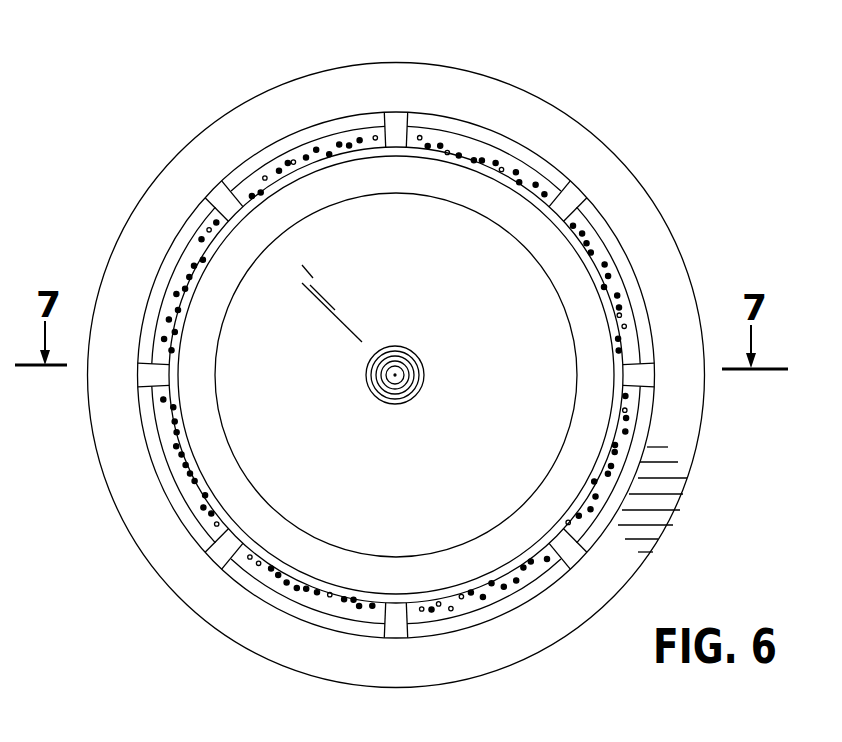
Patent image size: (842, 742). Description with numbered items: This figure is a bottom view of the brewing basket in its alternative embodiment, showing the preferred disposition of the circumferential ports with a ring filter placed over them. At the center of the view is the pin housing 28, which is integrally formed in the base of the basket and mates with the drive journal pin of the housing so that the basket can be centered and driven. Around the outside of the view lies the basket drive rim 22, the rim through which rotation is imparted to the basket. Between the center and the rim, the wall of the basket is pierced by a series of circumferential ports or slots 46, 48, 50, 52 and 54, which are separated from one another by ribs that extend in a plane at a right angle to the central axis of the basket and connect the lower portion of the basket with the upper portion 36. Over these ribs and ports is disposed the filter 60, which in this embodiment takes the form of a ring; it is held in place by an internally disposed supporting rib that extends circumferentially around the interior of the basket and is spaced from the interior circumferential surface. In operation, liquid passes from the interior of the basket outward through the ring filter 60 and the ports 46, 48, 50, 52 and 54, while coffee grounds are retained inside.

The basket drive rim 22 is at (680, 473).
The pin housing 28 is at (401, 368).
The upper portion 36 is at (178, 508).
The port 46 is at (270, 582).
The port 48 is at (160, 445).
The port 50 is at (210, 227).
The port 52 is at (333, 135).
The port 54 is at (490, 135).
The filter 60 is at (603, 250).